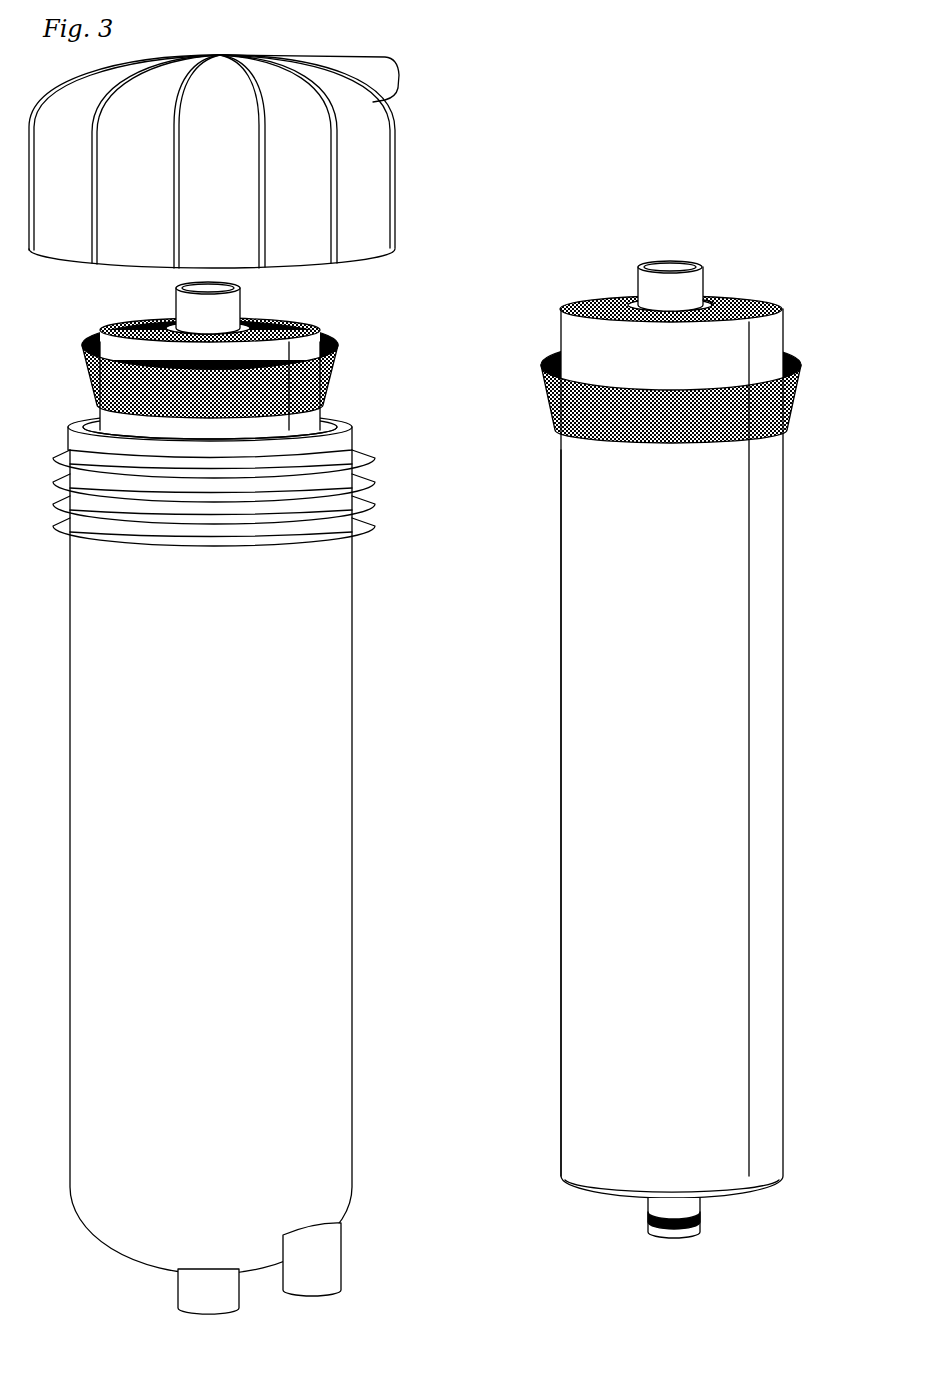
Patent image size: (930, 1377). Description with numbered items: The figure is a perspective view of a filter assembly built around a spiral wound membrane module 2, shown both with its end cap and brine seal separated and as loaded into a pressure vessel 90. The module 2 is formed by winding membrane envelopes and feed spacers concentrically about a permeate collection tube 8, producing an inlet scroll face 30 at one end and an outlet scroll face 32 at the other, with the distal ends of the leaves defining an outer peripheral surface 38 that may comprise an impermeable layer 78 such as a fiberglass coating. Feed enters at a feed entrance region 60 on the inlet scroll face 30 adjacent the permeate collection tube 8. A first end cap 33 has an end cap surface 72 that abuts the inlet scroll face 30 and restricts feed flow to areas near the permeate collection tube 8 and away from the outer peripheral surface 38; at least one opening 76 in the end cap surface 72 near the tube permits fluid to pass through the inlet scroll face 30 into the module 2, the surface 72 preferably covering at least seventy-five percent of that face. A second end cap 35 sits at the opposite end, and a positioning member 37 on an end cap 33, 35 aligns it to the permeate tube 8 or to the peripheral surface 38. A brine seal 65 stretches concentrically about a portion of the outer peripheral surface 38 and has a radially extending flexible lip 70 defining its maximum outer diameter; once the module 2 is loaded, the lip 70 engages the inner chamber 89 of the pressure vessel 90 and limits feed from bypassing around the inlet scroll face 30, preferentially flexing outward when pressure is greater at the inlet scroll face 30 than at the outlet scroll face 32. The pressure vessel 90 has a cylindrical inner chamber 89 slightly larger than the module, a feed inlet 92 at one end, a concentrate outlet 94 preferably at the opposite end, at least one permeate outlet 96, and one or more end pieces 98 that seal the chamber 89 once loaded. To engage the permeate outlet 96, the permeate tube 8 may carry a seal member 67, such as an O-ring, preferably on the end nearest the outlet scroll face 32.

The module 2 is at (416, 684).
The permeate collection tube 8 is at (645, 267).
The inlet scroll face 30 is at (624, 722).
The outlet scroll face 32 is at (730, 1198).
The first end cap 33 is at (127, 320).
The end cap 35 is at (561, 1180).
The positioning member 37 is at (710, 307).
The outer peripheral surface 38 is at (580, 590).
The feed entrance region 60 is at (630, 297).
The brine seal 65 is at (347, 378).
The seal member 67 is at (647, 1214).
The flexible lip 70 is at (340, 348).
The end cap surface 72 is at (285, 318).
The opening 76 is at (707, 297).
The impermeable layer 78 is at (560, 692).
The inner chamber 89 is at (87, 410).
The pressure vessel 90 is at (388, 534).
The feed inlet 92 is at (387, 100).
The concentrate outlet 94 is at (341, 1248).
The permeate outlet 96 is at (177, 1298).
The end piece 98 is at (396, 183).